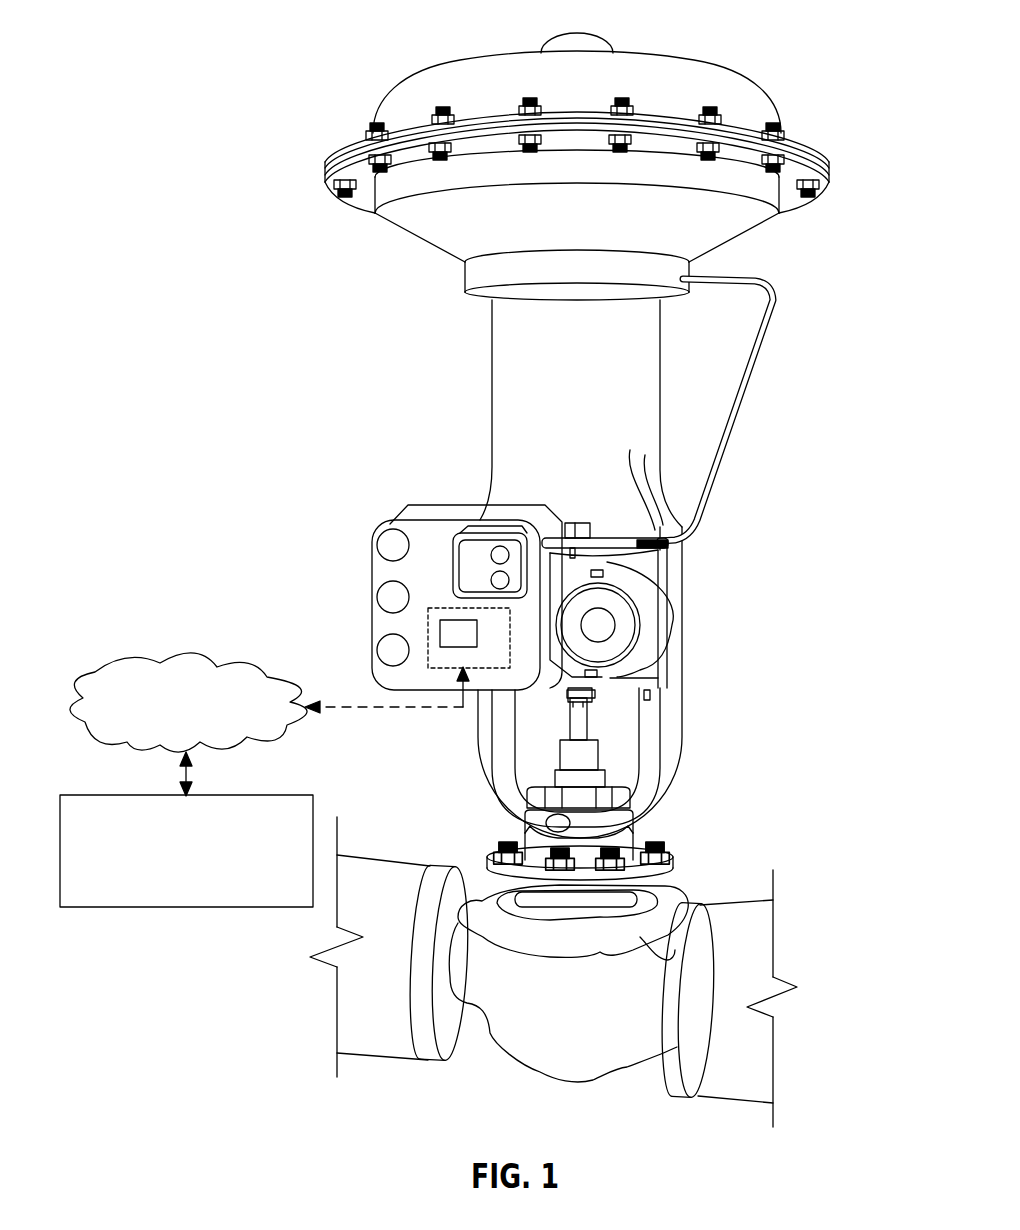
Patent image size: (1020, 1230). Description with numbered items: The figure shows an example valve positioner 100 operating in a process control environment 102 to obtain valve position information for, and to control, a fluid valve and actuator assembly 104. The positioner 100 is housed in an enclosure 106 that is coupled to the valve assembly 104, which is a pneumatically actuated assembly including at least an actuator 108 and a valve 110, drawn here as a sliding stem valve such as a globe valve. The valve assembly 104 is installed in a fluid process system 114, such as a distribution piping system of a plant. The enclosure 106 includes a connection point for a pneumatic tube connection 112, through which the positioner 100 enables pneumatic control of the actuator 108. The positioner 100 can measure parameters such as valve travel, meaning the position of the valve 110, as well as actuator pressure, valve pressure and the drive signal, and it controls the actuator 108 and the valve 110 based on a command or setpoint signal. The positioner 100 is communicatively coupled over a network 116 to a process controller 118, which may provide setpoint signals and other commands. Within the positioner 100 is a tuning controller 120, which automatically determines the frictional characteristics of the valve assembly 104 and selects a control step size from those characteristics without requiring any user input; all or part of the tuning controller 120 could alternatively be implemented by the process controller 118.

The valve positioner 100 is at (428, 640).
The process control environment 102 is at (563, 580).
The fluid valve and actuator assembly 104 is at (545, 456).
The enclosure 106 is at (493, 597).
The actuator 108 is at (427, 72).
The valve 110 is at (460, 873).
The pneumatic tube connection 112 is at (757, 352).
The fluid process system 114 is at (735, 840).
The network 116 is at (215, 658).
The process controller 118 is at (186, 851).
The tuning controller 120 is at (457, 618).